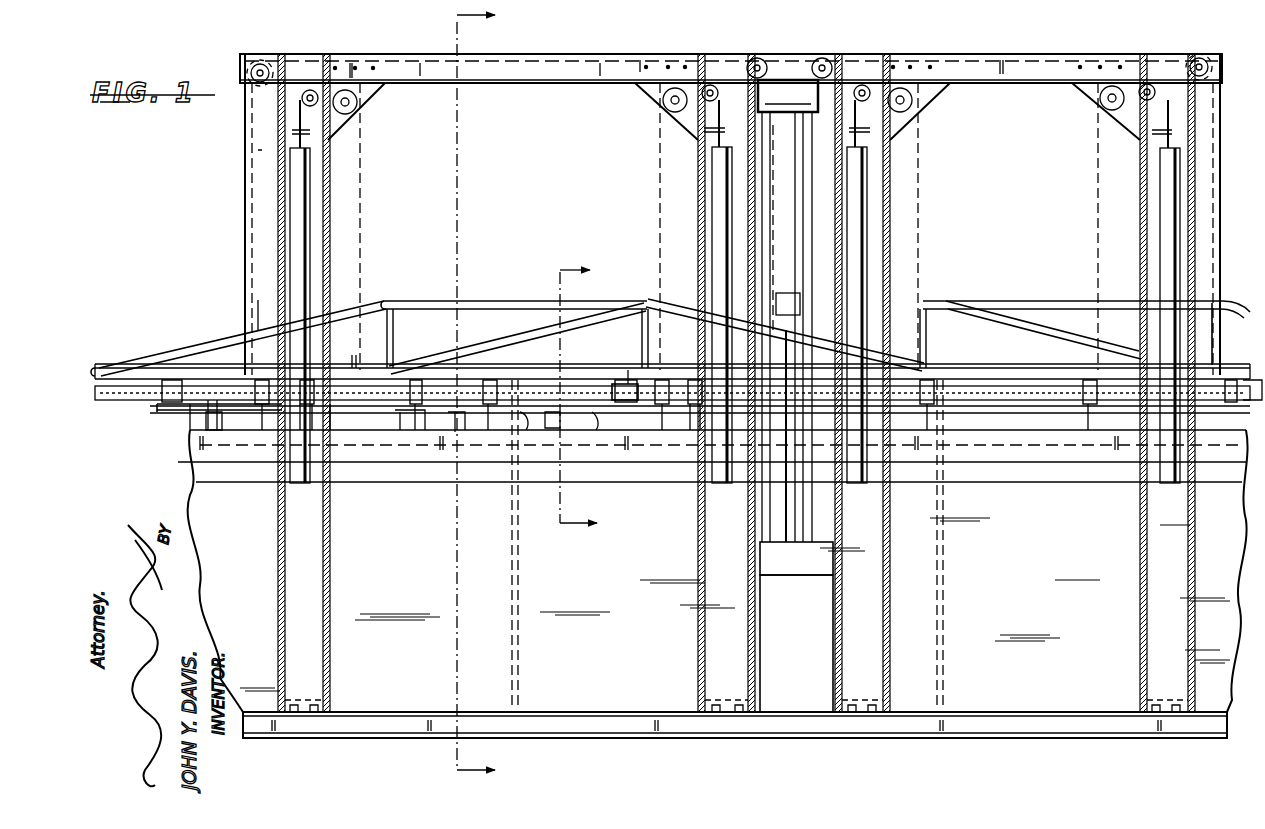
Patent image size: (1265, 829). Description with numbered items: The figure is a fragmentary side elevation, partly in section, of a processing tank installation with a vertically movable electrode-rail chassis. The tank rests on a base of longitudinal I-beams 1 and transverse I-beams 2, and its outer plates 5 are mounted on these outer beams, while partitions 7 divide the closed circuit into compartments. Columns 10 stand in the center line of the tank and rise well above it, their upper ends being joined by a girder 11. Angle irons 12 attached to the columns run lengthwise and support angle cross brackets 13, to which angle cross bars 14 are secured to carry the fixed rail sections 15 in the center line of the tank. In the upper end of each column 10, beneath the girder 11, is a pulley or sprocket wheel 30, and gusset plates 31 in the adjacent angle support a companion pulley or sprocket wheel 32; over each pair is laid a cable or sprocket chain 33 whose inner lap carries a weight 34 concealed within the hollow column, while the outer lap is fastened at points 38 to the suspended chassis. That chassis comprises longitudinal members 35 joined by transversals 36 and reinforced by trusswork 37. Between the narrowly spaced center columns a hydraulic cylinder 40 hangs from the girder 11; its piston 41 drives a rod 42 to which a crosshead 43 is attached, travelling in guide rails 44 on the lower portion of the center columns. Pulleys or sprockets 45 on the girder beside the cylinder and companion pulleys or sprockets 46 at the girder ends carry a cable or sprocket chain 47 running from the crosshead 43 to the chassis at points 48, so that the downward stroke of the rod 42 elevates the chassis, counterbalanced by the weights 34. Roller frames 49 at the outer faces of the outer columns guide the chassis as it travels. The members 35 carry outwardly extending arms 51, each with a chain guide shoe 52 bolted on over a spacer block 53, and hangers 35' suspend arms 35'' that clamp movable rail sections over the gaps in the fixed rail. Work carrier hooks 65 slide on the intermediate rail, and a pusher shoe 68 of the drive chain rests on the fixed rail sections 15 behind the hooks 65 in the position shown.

The longitudinal I-beams 1 is at (547, 727).
The transverse I-beams 2 is at (455, 393).
The outer plates 5 is at (1068, 700).
The partitions 7 is at (982, 575).
The columns 10 is at (330, 606).
The girder 11 is at (990, 54).
The angle irons 12 is at (252, 470).
The angle cross brackets 13 is at (455, 430).
The angle cross bars 14 is at (420, 430).
The rail sections 15 is at (158, 413).
The pulley or sprocket wheel 30 is at (310, 89).
The gusset plates 31 is at (358, 108).
The companion pulley or sprocket wheel 32 is at (375, 130).
The cable or sprocket chain 33 is at (362, 230).
The weight 34 is at (712, 205).
The longitudinal members 35 is at (678, 371).
The hangers 35' is at (639, 427).
The outwardly extending arms 35'' is at (746, 430).
The transversals 36 is at (356, 368).
The trusswork 37 is at (520, 302).
The attachment points 38 is at (662, 312).
The hydraulic cylinder 40 is at (770, 240).
The piston 41 is at (815, 292).
The rod 42 is at (762, 520).
The crosshead 43 is at (822, 566).
The guide rails 44 is at (838, 672).
The pulleys or sprockets 45 is at (757, 58).
The companion pulleys or sprockets 46 is at (259, 63).
The cable or sprocket chain 47 is at (244, 142).
The attachment points 48 is at (248, 378).
The roller frames 49 is at (280, 330).
The outwardly extending arms 51 is at (640, 345).
The chain guide shoe 52 is at (620, 382).
The spacer block 53 is at (630, 382).
The work carrier hooks 65 is at (220, 430).
The shoe 68 is at (192, 412).